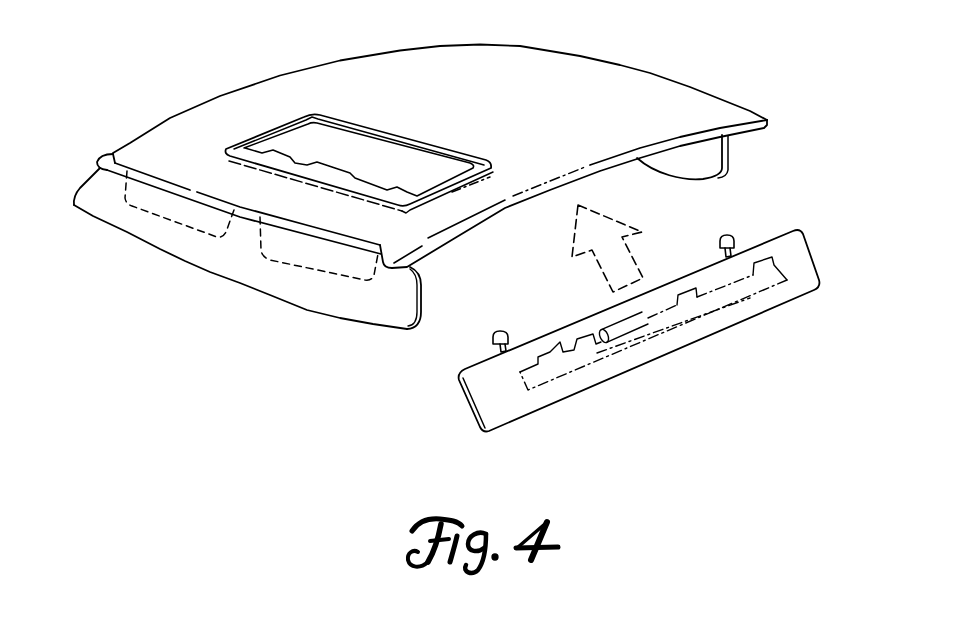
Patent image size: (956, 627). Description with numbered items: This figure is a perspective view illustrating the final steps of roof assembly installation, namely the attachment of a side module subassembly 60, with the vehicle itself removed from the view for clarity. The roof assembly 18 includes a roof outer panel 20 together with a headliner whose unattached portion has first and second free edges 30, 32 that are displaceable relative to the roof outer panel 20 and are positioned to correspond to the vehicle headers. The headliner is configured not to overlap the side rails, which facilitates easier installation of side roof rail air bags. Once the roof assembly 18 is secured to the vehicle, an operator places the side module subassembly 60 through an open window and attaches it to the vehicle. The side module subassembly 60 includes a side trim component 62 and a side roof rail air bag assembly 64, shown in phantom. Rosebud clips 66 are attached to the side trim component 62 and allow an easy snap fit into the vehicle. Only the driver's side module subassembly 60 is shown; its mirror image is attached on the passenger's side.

The roof assembly 18 is at (160, 70).
The roof outer panel 20 is at (521, 115).
The first free edge 30 is at (232, 284).
The second free edge 32 is at (730, 167).
The side module subassembly 60 is at (434, 446).
The side trim component 62 is at (507, 413).
The side roof rail air bag assembly 64 is at (583, 372).
The rosebud clips 66 is at (508, 336).